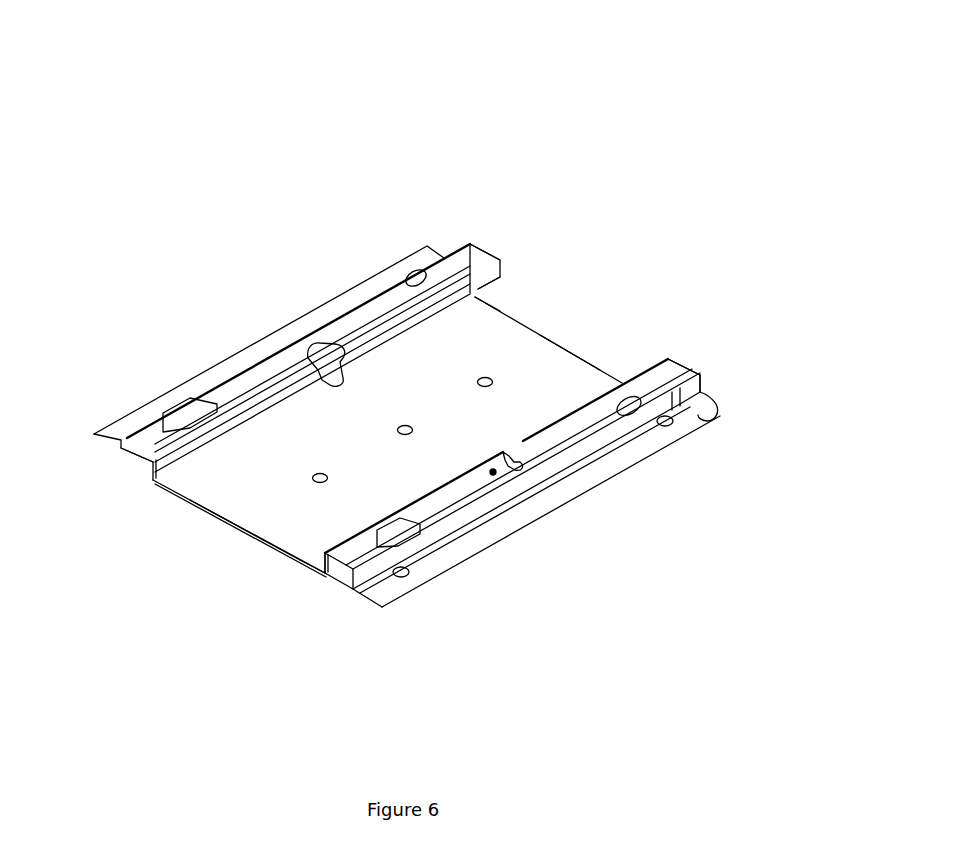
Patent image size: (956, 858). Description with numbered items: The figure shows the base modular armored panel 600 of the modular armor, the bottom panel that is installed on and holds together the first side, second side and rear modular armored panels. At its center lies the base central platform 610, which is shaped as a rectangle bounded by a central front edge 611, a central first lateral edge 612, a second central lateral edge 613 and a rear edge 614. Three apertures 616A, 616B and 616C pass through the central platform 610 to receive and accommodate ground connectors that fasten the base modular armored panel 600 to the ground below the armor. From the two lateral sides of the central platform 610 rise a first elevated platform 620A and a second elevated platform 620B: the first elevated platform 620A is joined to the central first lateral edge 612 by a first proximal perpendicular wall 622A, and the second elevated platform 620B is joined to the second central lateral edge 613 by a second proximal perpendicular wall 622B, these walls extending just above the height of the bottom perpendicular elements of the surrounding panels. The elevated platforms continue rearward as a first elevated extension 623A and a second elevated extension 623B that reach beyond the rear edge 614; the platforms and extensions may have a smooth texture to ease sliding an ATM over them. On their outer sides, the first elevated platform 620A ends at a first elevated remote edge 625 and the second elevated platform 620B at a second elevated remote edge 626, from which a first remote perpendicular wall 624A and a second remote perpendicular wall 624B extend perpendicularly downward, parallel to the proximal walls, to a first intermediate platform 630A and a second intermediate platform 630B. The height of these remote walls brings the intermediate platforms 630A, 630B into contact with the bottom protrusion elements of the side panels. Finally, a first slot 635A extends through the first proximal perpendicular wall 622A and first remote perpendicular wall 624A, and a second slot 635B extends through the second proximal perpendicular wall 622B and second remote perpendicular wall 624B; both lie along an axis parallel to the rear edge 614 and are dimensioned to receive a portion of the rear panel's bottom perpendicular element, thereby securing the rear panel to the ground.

The base modular armored panel 600 is at (348, 190).
The base central platform 610 is at (232, 490).
The central front edge 611 is at (257, 533).
The central first lateral edge 612 is at (478, 297).
The second central lateral edge 613 is at (333, 590).
The rear edge 614 is at (570, 380).
The aperture 616A is at (490, 371).
The aperture 616B is at (408, 417).
The aperture 616C is at (323, 464).
The first elevated platform 620A is at (283, 372).
The second elevated platform 620B is at (443, 508).
The first proximal perpendicular wall 622A is at (173, 453).
The second proximal perpendicular wall 622B is at (308, 558).
The first elevated extension 623A is at (488, 252).
The second elevated extension 623B is at (683, 370).
The first remote perpendicular wall 624A is at (130, 452).
The second remote perpendicular wall 624B is at (707, 392).
The first elevated remote edge 625 is at (470, 242).
The second elevated remote edge 626 is at (707, 372).
The first intermediate platform 630A is at (152, 402).
The second intermediate platform 630B is at (550, 517).
The first slot 635A is at (477, 297).
The second slot 635B is at (687, 417).